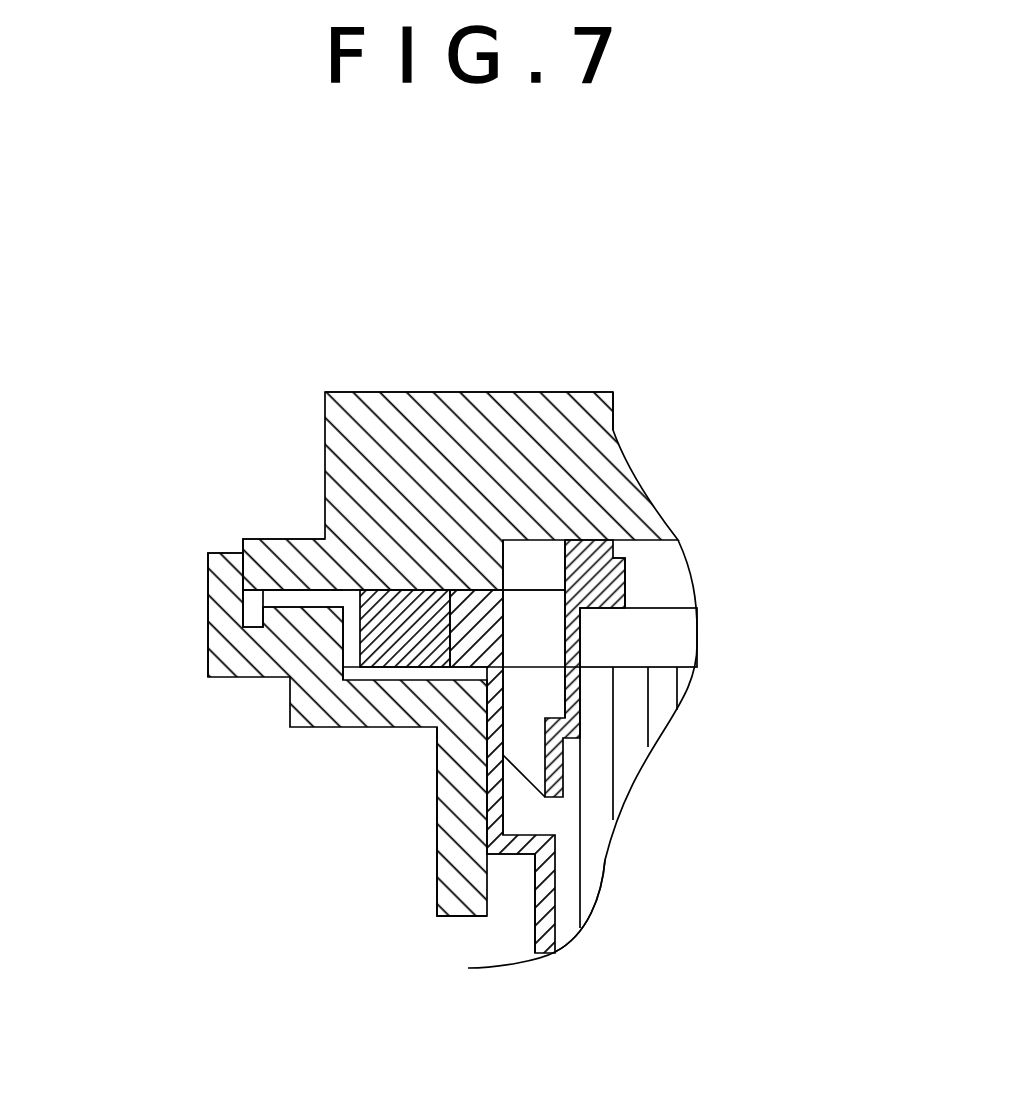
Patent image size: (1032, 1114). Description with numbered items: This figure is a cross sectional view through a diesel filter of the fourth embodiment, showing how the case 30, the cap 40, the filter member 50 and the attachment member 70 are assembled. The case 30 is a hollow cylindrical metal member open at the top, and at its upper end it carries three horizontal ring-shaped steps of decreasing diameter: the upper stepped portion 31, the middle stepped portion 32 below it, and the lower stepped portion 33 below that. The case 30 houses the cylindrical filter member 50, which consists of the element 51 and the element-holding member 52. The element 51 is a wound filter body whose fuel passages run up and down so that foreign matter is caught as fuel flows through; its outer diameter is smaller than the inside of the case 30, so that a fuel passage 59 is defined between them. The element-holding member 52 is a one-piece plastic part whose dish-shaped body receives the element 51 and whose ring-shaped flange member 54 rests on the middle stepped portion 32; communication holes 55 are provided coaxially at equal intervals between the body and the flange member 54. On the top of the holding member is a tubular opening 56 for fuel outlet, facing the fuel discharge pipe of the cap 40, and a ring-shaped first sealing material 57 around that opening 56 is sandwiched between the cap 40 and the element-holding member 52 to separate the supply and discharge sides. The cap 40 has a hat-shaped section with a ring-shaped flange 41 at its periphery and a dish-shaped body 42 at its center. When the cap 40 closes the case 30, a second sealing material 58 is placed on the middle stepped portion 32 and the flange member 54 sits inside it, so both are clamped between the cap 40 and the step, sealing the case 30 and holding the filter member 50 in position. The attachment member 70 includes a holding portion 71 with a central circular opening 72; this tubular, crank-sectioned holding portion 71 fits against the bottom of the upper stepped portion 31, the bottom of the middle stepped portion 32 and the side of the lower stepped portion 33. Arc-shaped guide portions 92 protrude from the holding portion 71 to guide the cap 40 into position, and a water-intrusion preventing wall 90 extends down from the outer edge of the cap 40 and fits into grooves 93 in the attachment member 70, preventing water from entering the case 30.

The case 30 is at (560, 877).
The upper stepped portion 31 is at (302, 602).
The middle stepped portion 32 is at (392, 677).
The lower stepped portion 33 is at (520, 850).
The cap 40 is at (385, 389).
The flange 41 is at (283, 547).
The body 42 is at (507, 398).
The filter member 50 is at (702, 660).
The element 51 is at (625, 757).
The element-holding member 52 is at (585, 703).
The flange member 54 is at (483, 590).
The communication holes 55 is at (530, 607).
The opening for fuel outlet 56 is at (627, 583).
The first sealing material 57 is at (613, 550).
The second sealing material 58 is at (401, 608).
The fuel passage 59 is at (567, 928).
The attachment member 70 is at (206, 679).
The holding portion 71 is at (437, 840).
The circular opening 72 is at (497, 882).
The water-intrusion preventing wall 90 is at (253, 604).
The guide portions 92 is at (208, 575).
The grooves 93 is at (300, 603).